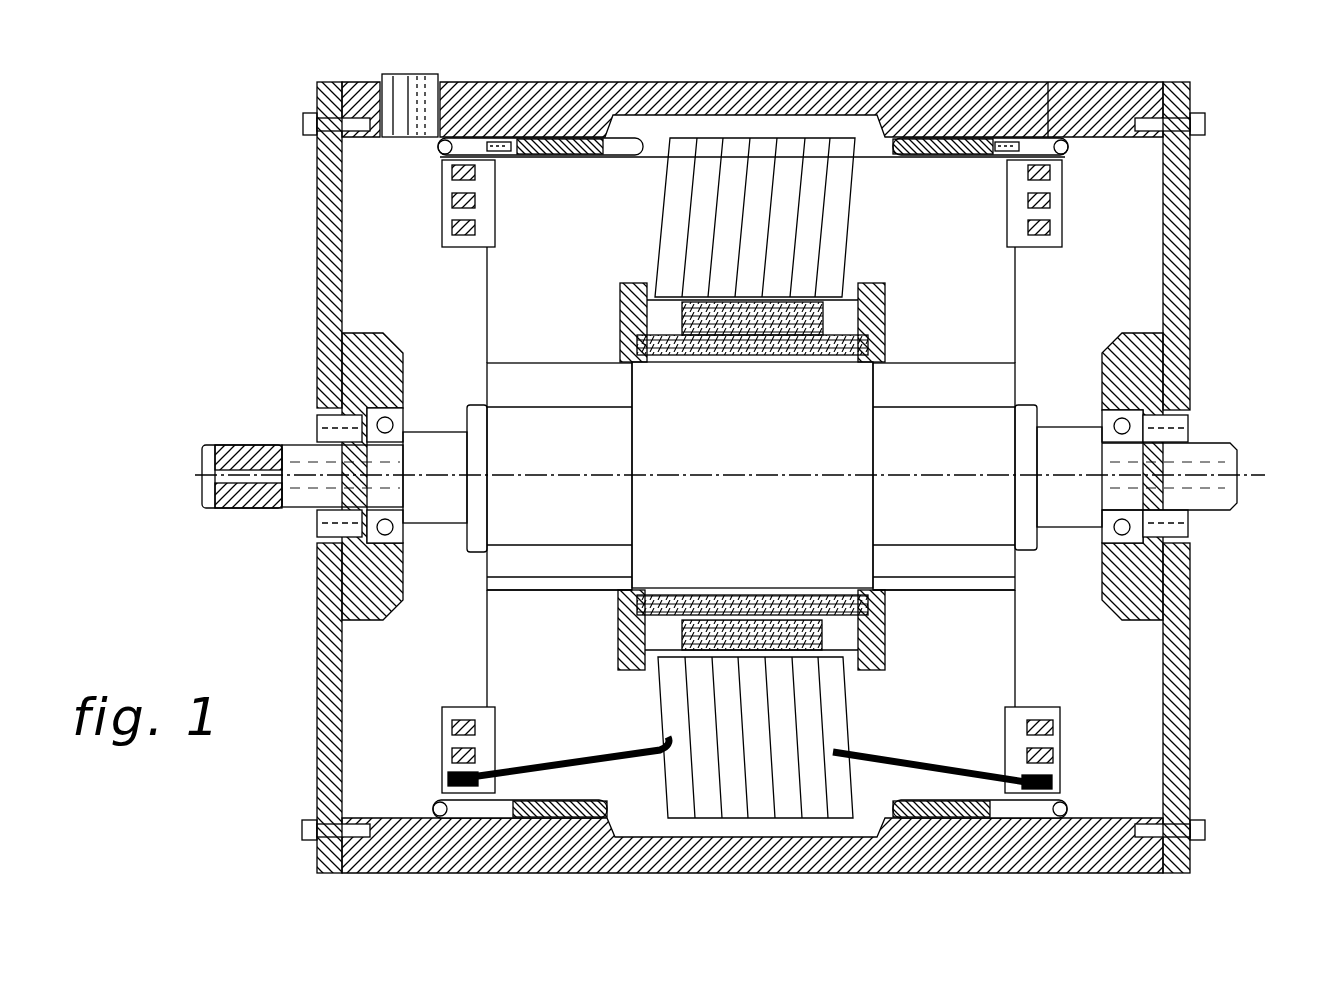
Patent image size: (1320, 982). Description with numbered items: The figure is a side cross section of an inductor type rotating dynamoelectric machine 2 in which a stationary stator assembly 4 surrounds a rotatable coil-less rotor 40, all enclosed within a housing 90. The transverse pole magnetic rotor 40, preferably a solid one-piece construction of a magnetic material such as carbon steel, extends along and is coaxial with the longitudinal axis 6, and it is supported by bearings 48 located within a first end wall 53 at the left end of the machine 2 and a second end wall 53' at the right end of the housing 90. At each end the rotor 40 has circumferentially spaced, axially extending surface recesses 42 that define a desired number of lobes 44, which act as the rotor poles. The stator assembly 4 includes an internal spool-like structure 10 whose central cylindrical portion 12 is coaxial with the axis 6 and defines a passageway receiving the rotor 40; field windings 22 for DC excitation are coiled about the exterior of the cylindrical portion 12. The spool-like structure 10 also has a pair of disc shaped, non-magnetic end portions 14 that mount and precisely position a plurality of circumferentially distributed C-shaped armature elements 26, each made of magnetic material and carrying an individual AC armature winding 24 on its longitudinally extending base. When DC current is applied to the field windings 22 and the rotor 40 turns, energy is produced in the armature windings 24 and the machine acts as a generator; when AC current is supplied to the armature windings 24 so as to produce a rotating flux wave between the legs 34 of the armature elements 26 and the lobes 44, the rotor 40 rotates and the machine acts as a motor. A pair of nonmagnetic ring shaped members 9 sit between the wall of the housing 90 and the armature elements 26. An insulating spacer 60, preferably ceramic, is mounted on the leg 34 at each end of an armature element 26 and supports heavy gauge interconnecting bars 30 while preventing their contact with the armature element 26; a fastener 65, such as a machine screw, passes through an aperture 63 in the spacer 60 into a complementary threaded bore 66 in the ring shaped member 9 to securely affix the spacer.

The inductor type rotating dynamoelectric machine 2 is at (287, 179).
The stator assembly 4 is at (448, 291).
The longitudinal axis 6 is at (212, 475).
The ring shaped member 9 is at (887, 140).
The spool-like structure 10 is at (652, 320).
The cylindrical portion 12 is at (782, 357).
The end portion 14 is at (622, 283).
The field winding 22 is at (732, 588).
The armature winding 24 is at (833, 228).
The C-shaped armature element 26 is at (880, 182).
The interconnecting bar 30 is at (462, 140).
The leg 34 is at (487, 322).
The rotor 40 is at (1040, 548).
The surface recess 42 is at (568, 365).
The lobe 44 is at (947, 585).
The bearing 48 is at (405, 495).
The first end wall 53 is at (276, 477).
The second end wall 53' is at (1236, 477).
The spacer 60 is at (442, 190).
The aperture 63 is at (1048, 82).
The fastener 65 is at (445, 150).
The threaded bore 66 is at (1003, 160).
The housing 90 is at (615, 82).